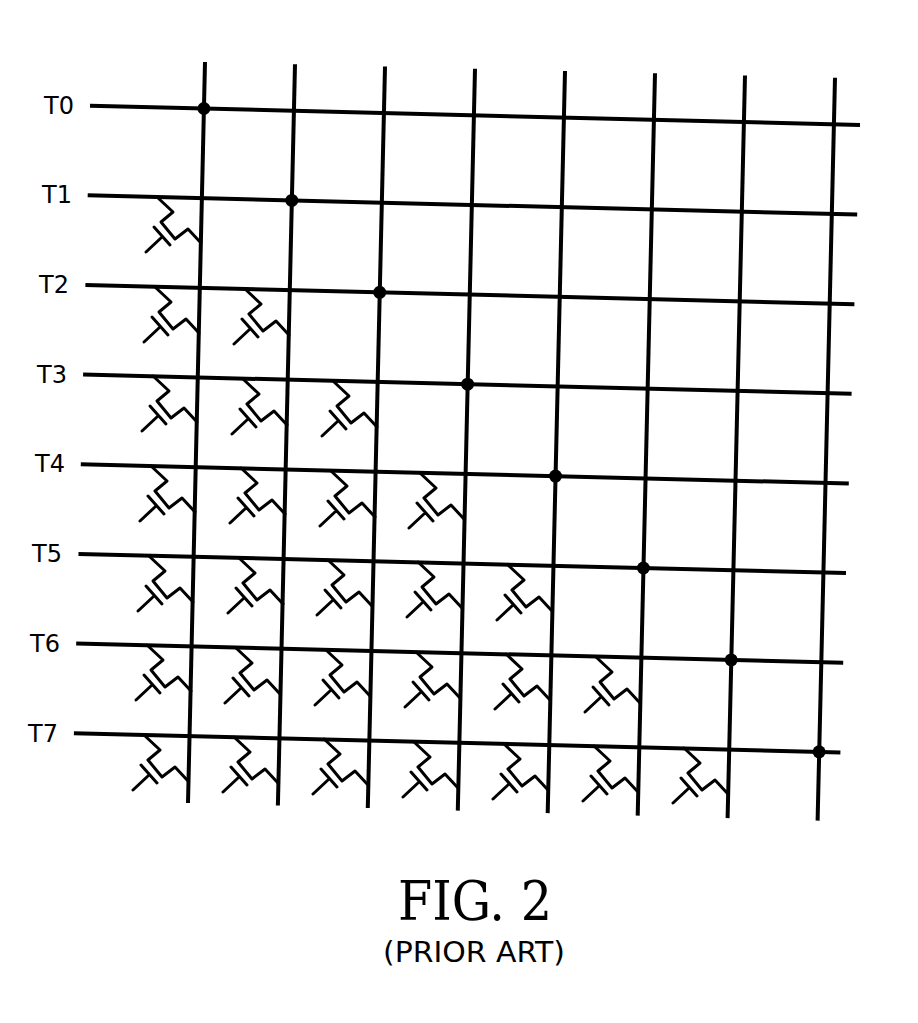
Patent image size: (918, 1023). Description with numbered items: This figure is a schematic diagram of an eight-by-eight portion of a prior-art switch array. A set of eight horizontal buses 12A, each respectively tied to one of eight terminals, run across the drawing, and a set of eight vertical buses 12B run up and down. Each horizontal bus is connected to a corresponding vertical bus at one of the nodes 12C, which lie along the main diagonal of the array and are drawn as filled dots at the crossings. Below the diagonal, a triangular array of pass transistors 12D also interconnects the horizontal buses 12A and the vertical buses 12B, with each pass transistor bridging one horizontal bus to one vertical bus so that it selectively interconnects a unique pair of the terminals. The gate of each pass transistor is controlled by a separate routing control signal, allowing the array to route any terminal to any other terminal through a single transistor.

The horizontal buses 12A is at (115, 105).
The vertical buses 12B is at (207, 82).
The nodes 12C is at (218, 108).
The pass transistors 12D is at (180, 212).